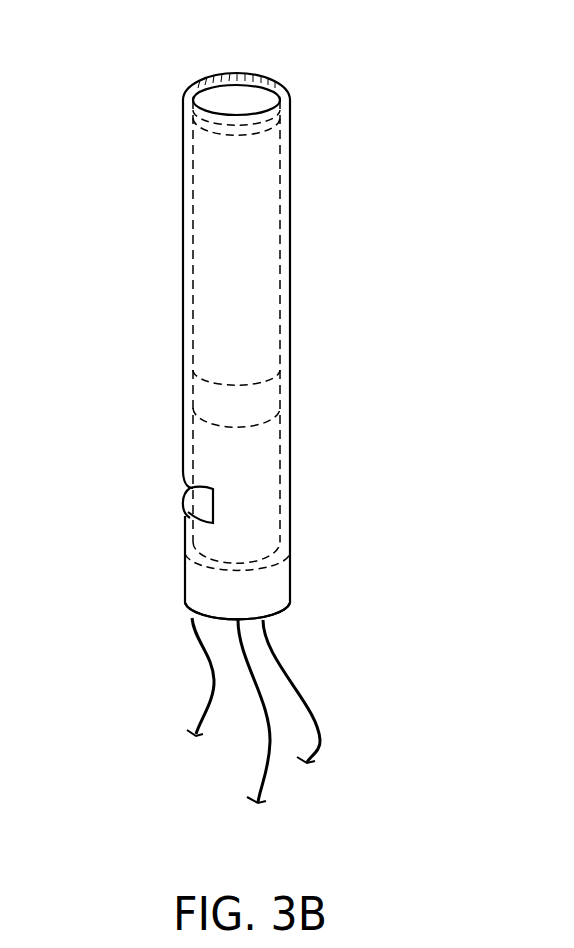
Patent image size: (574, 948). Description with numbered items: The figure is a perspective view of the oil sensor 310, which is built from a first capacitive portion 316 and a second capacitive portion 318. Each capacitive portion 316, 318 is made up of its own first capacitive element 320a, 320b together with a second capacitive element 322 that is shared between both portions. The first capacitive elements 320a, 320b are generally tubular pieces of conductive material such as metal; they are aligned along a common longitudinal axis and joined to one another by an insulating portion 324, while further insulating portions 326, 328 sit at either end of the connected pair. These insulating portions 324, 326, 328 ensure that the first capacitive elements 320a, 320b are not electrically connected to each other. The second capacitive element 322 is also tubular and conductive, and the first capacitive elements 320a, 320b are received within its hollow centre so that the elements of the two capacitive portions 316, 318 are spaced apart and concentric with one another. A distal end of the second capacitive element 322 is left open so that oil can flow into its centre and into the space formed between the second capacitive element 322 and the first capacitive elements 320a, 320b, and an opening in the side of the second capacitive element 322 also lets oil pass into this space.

The oil sensor 310 is at (141, 141).
The first capacitive portion 316 is at (304, 281).
The second capacitive portion 318 is at (311, 465).
The first capacitive element 320a is at (213, 187).
The first capacitive element 320b is at (207, 440).
The second capacitive element 322 is at (292, 140).
The insulating portion 324 is at (263, 398).
The insulating portion 326 is at (276, 590).
The insulating portion 328 is at (242, 98).